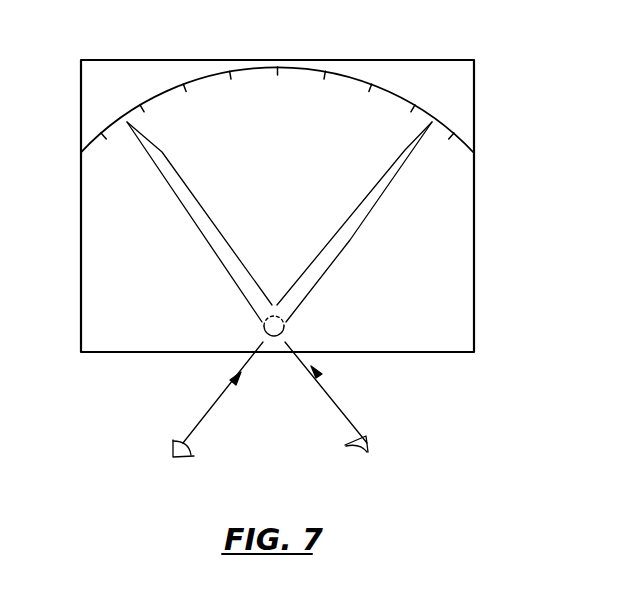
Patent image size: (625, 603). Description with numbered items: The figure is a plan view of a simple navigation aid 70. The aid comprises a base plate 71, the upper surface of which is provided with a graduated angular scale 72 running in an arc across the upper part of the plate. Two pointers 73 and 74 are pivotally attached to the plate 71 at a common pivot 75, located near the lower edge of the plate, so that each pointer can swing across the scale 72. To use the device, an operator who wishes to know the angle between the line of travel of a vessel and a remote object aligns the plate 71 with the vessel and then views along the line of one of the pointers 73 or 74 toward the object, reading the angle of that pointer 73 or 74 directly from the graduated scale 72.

The navigation aid 70 is at (478, 241).
The base plate 71 is at (386, 60).
The graduated angular scale 72 is at (93, 141).
The pointer 73 is at (243, 277).
The pointer 74 is at (328, 265).
The pivot 75 is at (273, 338).